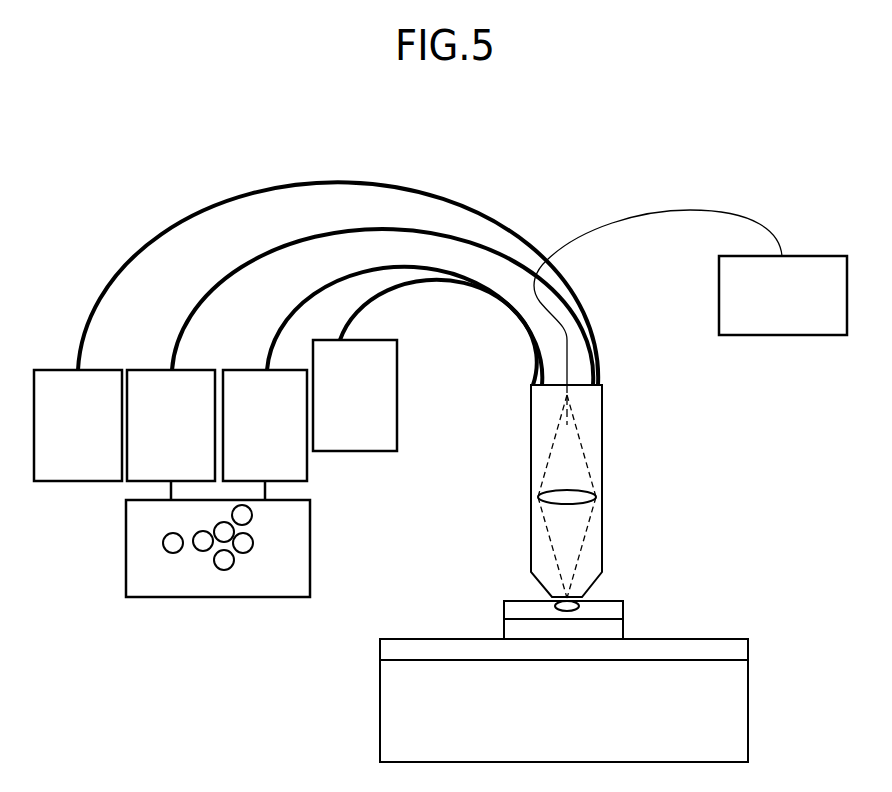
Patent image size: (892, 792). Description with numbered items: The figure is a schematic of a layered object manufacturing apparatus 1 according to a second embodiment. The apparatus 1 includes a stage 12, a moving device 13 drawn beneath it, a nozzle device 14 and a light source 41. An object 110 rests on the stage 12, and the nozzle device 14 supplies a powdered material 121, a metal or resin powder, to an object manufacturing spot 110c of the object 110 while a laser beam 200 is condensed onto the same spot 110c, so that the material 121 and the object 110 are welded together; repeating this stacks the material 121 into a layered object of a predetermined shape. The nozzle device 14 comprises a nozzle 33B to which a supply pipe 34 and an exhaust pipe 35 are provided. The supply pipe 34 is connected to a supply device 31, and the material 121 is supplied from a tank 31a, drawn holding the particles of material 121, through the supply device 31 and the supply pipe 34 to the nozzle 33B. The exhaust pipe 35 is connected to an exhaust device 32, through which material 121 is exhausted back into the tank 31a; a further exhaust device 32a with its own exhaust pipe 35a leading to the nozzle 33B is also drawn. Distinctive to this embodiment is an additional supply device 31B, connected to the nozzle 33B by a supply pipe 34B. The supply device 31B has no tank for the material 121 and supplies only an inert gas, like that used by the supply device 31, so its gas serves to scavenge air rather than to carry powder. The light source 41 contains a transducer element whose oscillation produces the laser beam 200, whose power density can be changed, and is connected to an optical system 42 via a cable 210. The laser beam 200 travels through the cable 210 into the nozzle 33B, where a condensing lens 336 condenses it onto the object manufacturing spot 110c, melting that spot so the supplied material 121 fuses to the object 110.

The layered object manufacturing apparatus 1 is at (785, 513).
The stage 12 is at (748, 652).
The moving device 13 is at (748, 732).
The nozzle device 14 is at (501, 462).
The supply device 31 is at (153, 370).
The supply device 31B is at (73, 481).
The tank 31a is at (173, 597).
The material 121 is at (224, 570).
The exhaust device 32 is at (308, 463).
The exhaust device 32a is at (362, 451).
The nozzle housing 33B is at (531, 525).
The supply pipe 34 is at (477, 245).
The supply pipe 34B is at (462, 206).
The exhaust pipe 35 is at (360, 273).
The exhaust pipe 35a is at (400, 295).
The light source 41 is at (782, 335).
The optical system 42 is at (587, 431).
The laser beam 200 is at (582, 470).
The cable 210 is at (668, 213).
The condensing lens 336 is at (596, 497).
The object 110 is at (623, 630).
The object manufacturing spot 110c is at (579, 606).